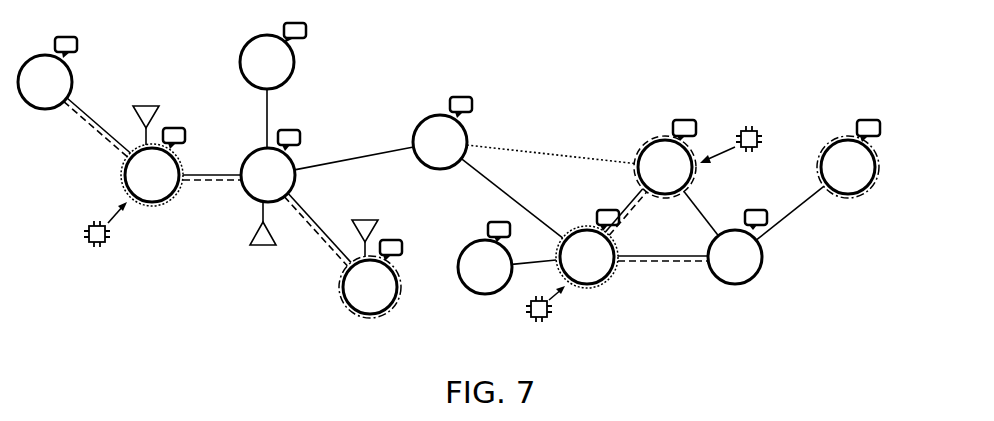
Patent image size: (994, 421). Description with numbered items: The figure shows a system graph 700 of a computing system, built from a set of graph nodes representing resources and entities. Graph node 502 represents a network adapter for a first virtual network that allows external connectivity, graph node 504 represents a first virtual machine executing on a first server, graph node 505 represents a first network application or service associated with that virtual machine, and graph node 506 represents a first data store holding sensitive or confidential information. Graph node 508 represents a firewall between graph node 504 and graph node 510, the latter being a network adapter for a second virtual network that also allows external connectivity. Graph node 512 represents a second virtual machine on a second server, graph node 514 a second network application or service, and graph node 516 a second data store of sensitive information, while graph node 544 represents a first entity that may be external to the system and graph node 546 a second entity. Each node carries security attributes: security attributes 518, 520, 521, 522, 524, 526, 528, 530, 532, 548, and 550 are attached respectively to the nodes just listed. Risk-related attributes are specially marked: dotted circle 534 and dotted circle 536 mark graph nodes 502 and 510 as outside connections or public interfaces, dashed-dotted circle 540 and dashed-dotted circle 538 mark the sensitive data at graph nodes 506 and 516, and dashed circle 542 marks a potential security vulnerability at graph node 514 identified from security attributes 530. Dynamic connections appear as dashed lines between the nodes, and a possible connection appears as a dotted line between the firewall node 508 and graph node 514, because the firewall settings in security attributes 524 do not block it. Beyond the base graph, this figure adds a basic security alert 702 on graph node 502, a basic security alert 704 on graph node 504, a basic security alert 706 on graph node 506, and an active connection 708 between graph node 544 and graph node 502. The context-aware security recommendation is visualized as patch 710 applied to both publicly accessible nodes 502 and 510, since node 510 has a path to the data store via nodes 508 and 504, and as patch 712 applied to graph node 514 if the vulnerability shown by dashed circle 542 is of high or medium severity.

The system graph 700 is at (140, 337).
The graph node 502 is at (137, 186).
The graph node 504 is at (253, 186).
The graph node 505 is at (252, 73).
The graph node 506 is at (355, 298).
The graph node 508 is at (425, 153).
The graph node 510 is at (572, 268).
The graph node 512 is at (720, 268).
The graph node 514 is at (650, 178).
The graph node 516 is at (833, 178).
The graph node 544 is at (30, 93).
The graph node 546 is at (470, 278).
The security attributes 518 is at (179, 128).
The security attributes 520 is at (295, 122).
The security attributes 521 is at (307, 28).
The security attributes 522 is at (403, 244).
The security attributes 524 is at (459, 97).
The security attributes 526 is at (610, 210).
The security attributes 528 is at (752, 210).
The security attributes 530 is at (691, 120).
The security attributes 532 is at (868, 120).
The security attributes 548 is at (78, 44).
The security attributes 550 is at (491, 222).
The dotted circle 534 is at (173, 200).
The dotted circle 536 is at (612, 280).
The dashed-dotted circle 538 is at (859, 189).
The dashed-dotted circle 540 is at (402, 290).
The dashed circle 542 is at (645, 140).
The basic security alert 702 is at (134, 106).
The basic security alert 704 is at (250, 243).
The basic security alert 706 is at (353, 220).
The active connection 708 is at (78, 121).
The patch 710 is at (90, 226).
The patch 712 is at (761, 128).